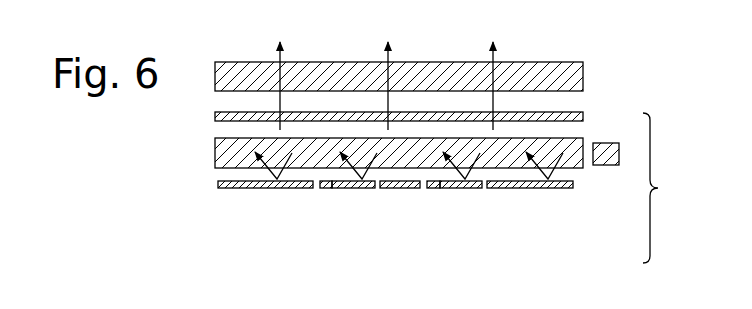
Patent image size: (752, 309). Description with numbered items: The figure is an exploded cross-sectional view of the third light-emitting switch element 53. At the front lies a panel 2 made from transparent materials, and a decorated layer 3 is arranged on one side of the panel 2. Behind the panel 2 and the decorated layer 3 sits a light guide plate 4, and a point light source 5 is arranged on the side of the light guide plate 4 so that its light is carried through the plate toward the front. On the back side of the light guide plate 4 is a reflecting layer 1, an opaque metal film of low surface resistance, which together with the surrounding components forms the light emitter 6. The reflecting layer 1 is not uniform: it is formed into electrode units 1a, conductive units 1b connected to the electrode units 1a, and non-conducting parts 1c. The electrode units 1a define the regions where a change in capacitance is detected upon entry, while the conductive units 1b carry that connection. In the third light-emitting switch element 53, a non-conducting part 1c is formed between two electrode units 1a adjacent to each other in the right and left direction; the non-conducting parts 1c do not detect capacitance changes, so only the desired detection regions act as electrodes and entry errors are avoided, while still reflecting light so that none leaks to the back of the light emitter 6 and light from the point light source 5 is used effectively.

The reflecting layer 1 is at (420, 236).
The electrode unit 1a is at (352, 190).
The conductive unit 1b is at (322, 190).
The non-conducting part 1c is at (266, 190).
The panel 2 is at (575, 65).
The decorated layer 3 is at (578, 110).
The light guide plate 4 is at (583, 140).
The point light source 5 is at (610, 163).
The light emitter 6 is at (663, 188).
The third light-emitting switch element 53 is at (412, 62).